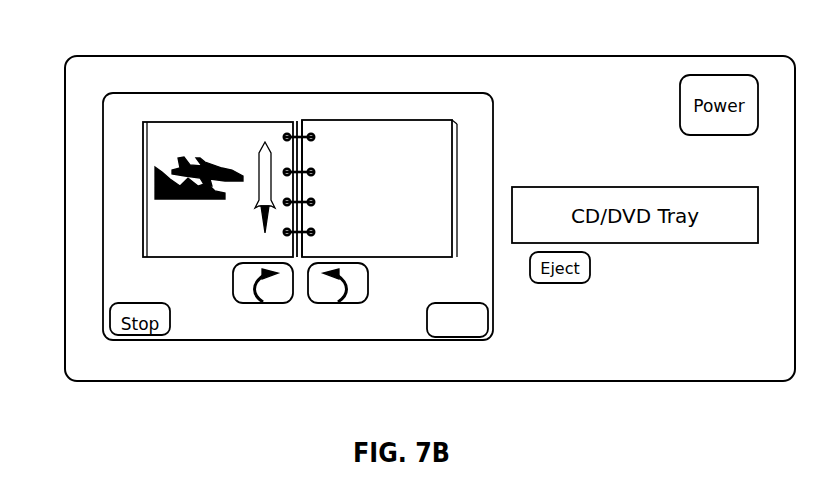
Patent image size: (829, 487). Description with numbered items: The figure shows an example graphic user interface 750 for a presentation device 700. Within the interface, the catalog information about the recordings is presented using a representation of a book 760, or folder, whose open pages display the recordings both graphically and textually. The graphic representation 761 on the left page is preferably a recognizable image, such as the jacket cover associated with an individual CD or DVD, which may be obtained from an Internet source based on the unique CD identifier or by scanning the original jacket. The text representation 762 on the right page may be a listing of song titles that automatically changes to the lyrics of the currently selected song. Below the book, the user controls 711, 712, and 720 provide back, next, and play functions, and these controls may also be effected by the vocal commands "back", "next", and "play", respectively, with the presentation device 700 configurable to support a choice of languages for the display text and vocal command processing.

The presentation device 700 is at (85, 362).
The graphic user interface 750 is at (300, 93).
The book 760 is at (307, 118).
The graphic representation 761 is at (243, 152).
The text representation 762 is at (345, 153).
The user control 711 is at (243, 295).
The user control 712 is at (355, 292).
The user control 720 is at (463, 338).